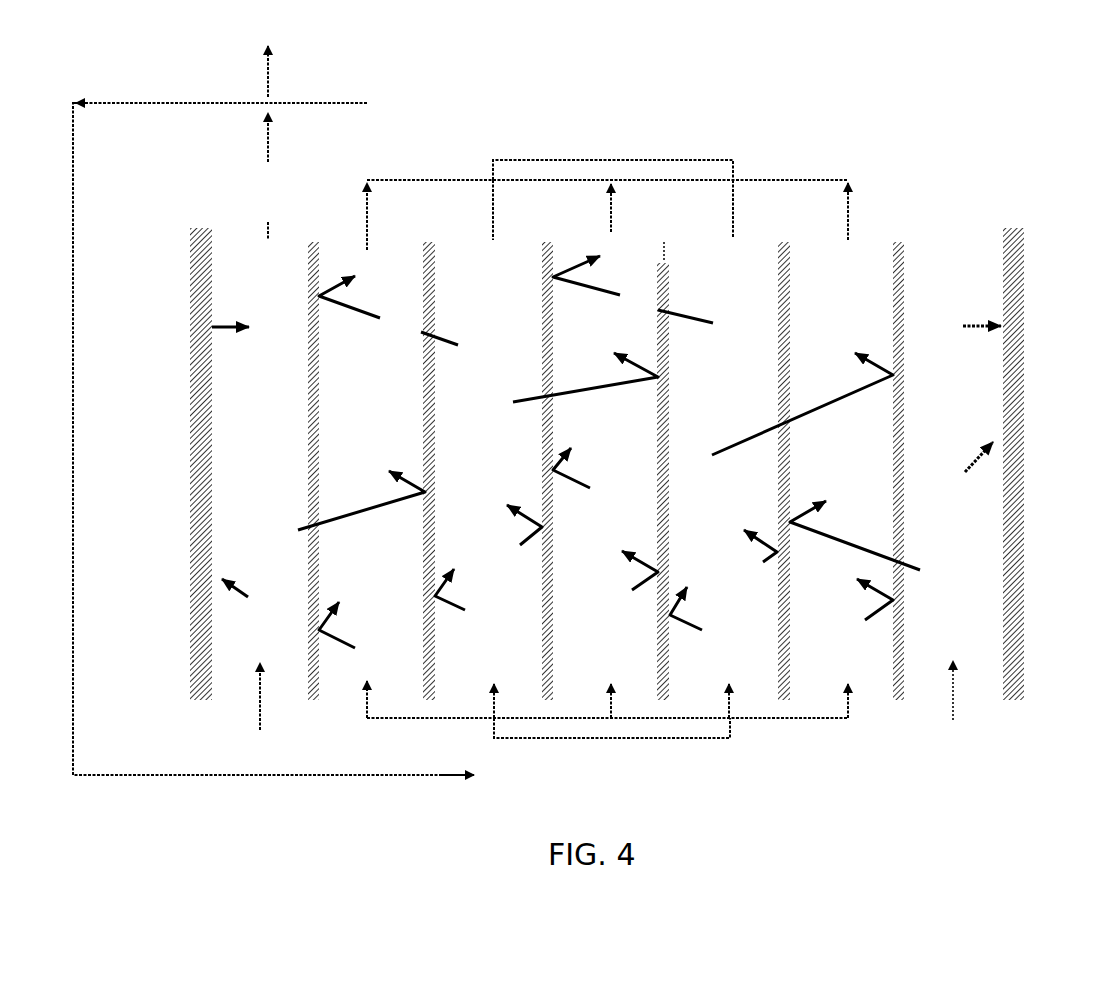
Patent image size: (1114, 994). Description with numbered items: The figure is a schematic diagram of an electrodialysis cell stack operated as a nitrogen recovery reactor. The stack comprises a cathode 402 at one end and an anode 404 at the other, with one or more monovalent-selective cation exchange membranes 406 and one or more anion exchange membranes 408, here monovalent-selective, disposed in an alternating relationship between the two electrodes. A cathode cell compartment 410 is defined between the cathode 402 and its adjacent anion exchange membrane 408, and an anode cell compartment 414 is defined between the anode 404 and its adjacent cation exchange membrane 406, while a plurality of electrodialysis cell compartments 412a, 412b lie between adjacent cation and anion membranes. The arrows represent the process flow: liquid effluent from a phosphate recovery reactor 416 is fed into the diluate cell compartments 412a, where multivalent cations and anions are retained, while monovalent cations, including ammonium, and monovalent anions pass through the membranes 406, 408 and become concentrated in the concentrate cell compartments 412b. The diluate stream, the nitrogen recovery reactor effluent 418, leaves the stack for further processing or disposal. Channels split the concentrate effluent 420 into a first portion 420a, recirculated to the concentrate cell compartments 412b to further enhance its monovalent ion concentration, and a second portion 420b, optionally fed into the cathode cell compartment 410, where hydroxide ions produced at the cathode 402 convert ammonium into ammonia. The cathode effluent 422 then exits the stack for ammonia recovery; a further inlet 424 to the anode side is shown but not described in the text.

The cathode 402 is at (165, 464).
The anode 404 is at (1057, 464).
The monovalent-selective cation exchange membrane 406 is at (666, 454).
The anion exchange membrane 408 is at (549, 451).
The cathode cell compartment 410 is at (225, 394).
The diluate cell compartment 412a is at (599, 457).
The concentrate cell compartment 412b is at (609, 449).
The anode cell compartment 414 is at (961, 394).
The liquid effluent from a phosphate recovery reactor 416 is at (730, 738).
The nitrogen recovery reactor effluent 418 is at (611, 160).
The concentrate effluent 420 is at (435, 180).
The first portion of concentrate effluent 420a is at (553, 718).
The second portion of concentrate effluent 420b is at (260, 775).
The cathode effluent 422 is at (273, 390).
The anolyte inlet 424 is at (955, 711).